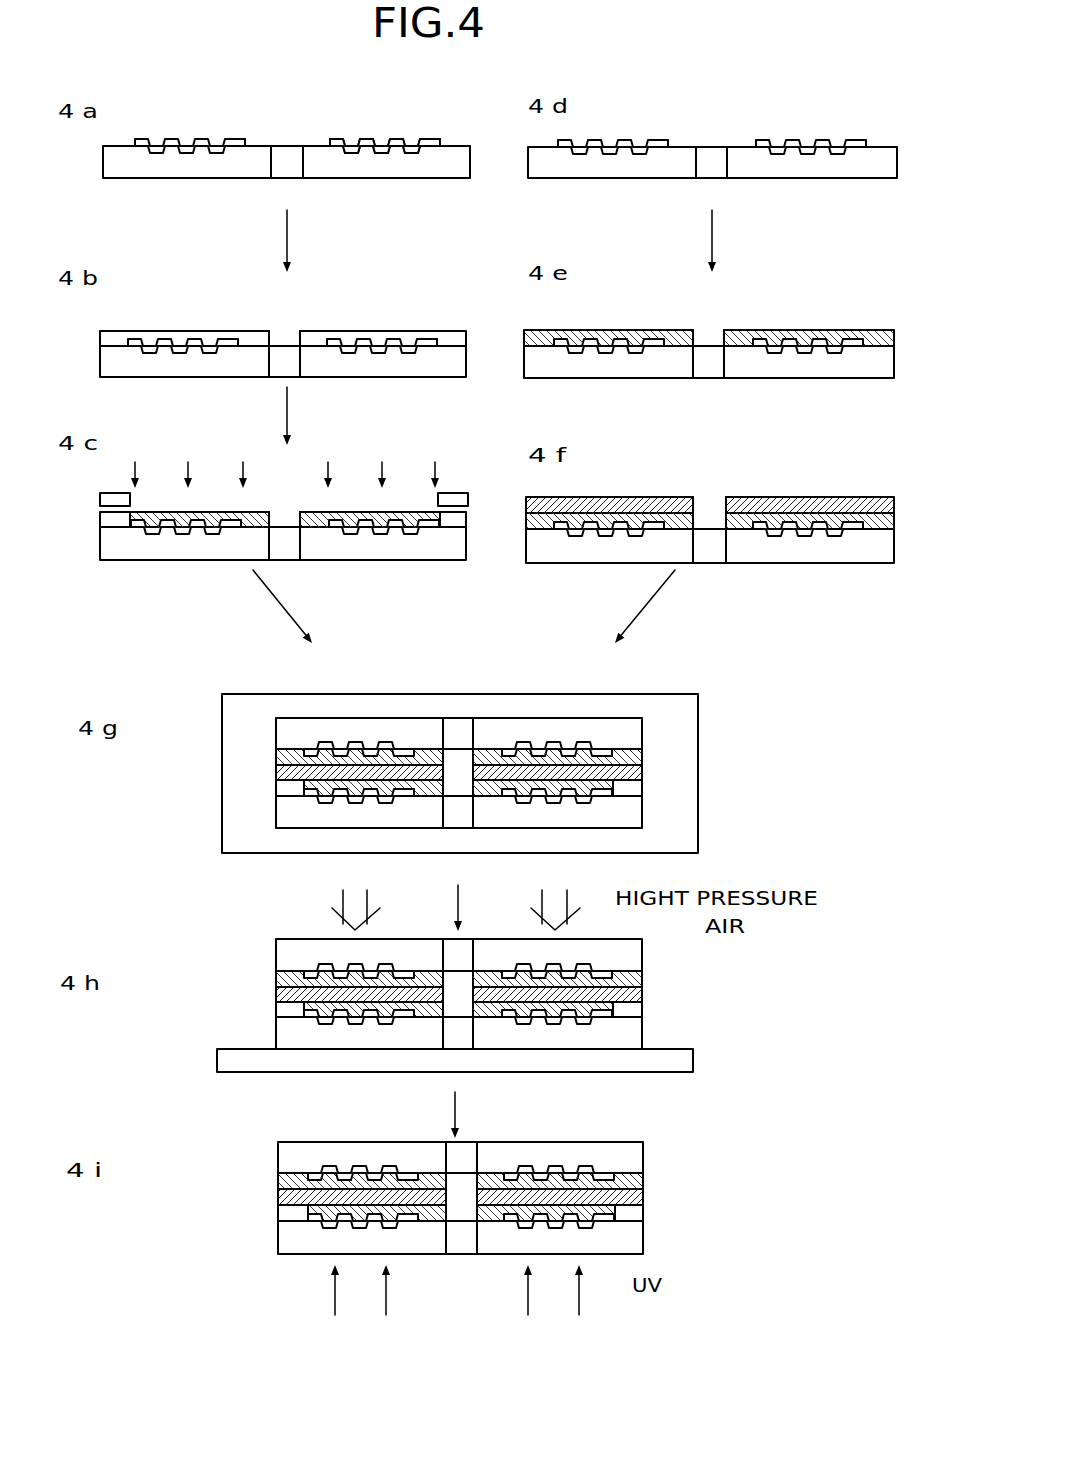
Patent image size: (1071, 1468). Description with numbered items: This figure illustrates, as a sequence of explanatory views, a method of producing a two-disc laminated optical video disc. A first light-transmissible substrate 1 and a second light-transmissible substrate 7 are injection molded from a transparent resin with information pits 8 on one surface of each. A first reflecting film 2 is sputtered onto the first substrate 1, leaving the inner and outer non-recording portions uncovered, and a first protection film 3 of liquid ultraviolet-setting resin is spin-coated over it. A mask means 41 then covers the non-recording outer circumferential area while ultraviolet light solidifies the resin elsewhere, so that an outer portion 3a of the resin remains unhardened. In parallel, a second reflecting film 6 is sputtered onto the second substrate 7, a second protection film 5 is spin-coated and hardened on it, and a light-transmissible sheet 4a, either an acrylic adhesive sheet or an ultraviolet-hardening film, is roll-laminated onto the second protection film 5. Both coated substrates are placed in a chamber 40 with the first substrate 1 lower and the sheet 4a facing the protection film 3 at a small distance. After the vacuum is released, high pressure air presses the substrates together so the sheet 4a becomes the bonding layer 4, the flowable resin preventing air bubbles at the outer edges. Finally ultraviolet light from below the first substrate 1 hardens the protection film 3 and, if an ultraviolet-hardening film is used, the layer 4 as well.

The first light-transmissible substrate 1 is at (430, 170).
The first reflecting film 2 is at (431, 140).
The first protection film 3 is at (448, 342).
The uncured edge portion of resin layer 3a is at (100, 515).
The adhesive layer 4 is at (635, 772).
The light-transmissible sheet 4a is at (826, 508).
The second protection film 5 is at (533, 338).
The second reflecting film 6 is at (856, 142).
The second light-transmissible substrate 7 is at (857, 170).
The information pits 8 is at (352, 153).
The chamber 40 is at (700, 718).
The mask means 41 is at (100, 498).